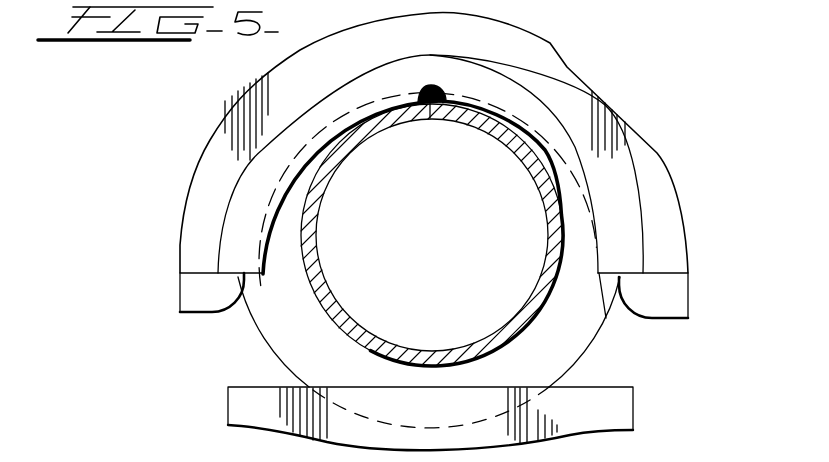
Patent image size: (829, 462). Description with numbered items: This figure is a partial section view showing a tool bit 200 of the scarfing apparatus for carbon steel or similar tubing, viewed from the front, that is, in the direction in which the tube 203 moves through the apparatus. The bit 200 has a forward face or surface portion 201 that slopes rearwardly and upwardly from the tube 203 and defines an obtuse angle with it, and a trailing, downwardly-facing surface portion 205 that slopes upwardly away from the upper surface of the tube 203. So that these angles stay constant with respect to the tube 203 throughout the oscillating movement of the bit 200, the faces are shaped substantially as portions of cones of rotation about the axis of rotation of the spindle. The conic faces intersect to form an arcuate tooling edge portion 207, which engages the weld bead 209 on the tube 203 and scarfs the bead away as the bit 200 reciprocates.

The tool bit 200 is at (630, 237).
The forward face 201 is at (620, 210).
The tube 203 is at (553, 238).
The trailing surface portion 205 is at (263, 240).
The arcuate tooling edge portion 207 is at (283, 197).
The weld bead 209 is at (447, 88).